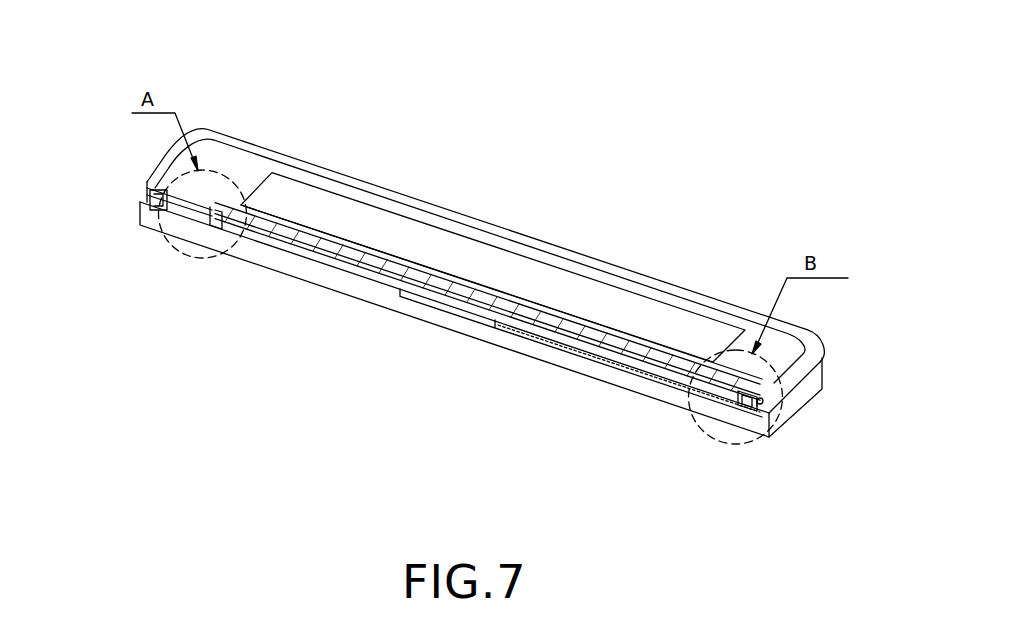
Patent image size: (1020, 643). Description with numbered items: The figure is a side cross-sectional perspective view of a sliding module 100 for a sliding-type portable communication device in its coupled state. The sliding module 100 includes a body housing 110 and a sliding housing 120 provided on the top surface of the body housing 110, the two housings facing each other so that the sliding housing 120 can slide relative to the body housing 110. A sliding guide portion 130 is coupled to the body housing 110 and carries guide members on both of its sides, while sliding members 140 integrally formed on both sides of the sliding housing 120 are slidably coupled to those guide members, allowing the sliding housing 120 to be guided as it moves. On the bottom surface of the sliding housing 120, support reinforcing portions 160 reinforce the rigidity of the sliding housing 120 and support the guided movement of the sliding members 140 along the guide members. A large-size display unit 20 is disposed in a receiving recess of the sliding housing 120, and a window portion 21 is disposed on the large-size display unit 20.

The sliding module 100 is at (700, 168).
The body housing 110 is at (143, 213).
The sliding housing 120 is at (511, 220).
The window portion 21 is at (384, 221).
The sliding guide portion 130 is at (288, 248).
The large-size display unit 20 is at (605, 343).
The sliding member 140 is at (764, 401).
The support reinforcing portion 160 is at (147, 188).